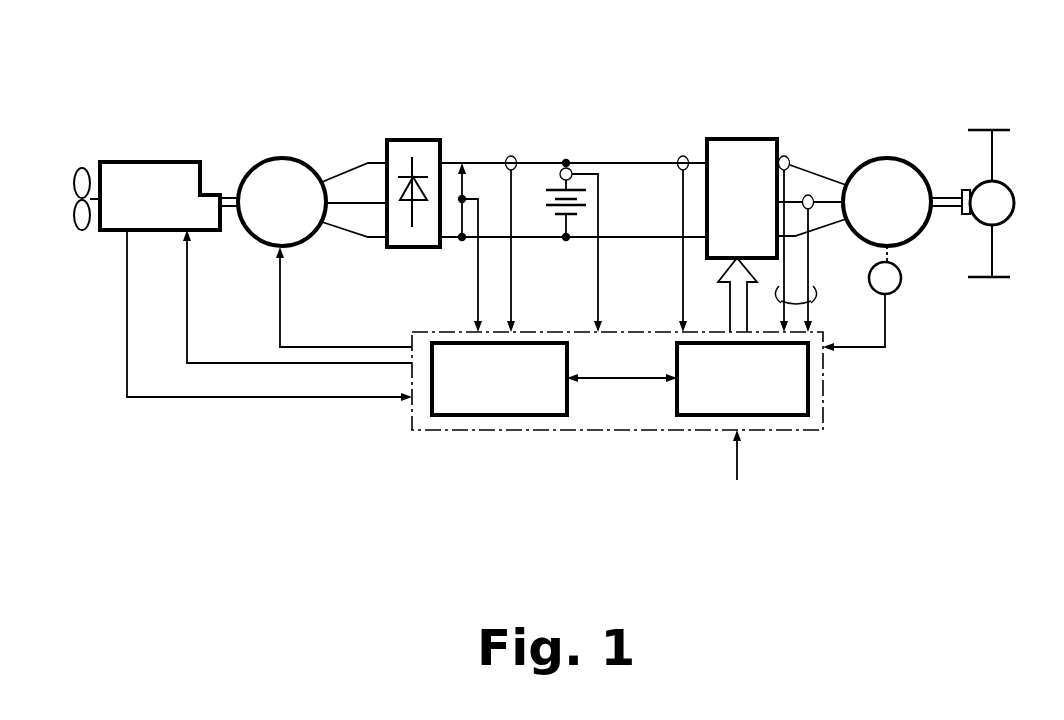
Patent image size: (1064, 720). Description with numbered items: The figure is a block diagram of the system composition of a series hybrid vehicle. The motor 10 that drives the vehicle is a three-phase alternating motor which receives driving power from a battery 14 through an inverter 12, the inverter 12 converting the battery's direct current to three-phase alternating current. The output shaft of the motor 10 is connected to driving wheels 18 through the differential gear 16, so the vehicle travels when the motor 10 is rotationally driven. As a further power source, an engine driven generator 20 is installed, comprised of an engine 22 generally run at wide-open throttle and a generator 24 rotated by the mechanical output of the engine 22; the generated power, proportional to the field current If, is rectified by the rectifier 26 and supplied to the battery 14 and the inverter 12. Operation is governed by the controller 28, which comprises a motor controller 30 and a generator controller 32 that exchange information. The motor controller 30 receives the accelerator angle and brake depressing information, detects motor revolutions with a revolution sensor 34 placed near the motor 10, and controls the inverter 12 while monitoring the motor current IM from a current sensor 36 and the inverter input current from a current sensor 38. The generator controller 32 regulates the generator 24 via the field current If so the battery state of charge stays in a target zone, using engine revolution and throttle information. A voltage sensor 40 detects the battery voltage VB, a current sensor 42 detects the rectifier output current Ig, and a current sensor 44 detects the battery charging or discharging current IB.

The motor 10 is at (888, 158).
The inverter 12 is at (740, 139).
The battery 14 is at (543, 172).
The differential gear 16 is at (1014, 203).
The driving wheels 18 is at (1012, 128).
The engine driven generator 20 is at (312, 86).
The engine 22 is at (148, 162).
The generator 24 is at (258, 158).
The rectifier 26 is at (410, 140).
The controller 28 is at (826, 418).
The motor controller 30 is at (693, 415).
The generator controller 32 is at (487, 415).
The revolution sensor 34 is at (900, 283).
The current sensor 36 is at (808, 194).
The current sensor 38 is at (683, 157).
The voltage sensor 40 is at (475, 172).
The current sensor 42 is at (510, 155).
The current sensor 44 is at (583, 168).